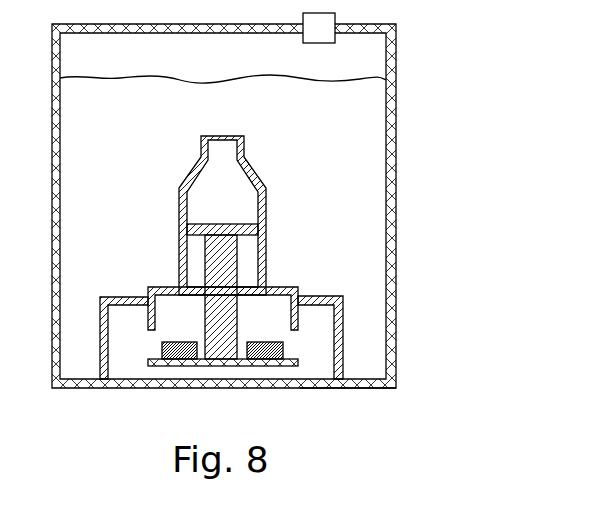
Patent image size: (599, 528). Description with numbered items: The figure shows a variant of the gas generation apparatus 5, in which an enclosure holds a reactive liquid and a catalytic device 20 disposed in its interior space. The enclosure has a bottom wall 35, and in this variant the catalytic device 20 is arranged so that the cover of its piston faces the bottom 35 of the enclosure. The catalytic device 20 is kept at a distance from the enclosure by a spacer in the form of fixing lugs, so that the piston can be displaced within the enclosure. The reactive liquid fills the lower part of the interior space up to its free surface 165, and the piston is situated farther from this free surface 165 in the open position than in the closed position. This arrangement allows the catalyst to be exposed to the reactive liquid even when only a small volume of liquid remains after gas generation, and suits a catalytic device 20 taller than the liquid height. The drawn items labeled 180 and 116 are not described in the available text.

The gas generation apparatus 5 is at (414, 113).
The free surface of the reactive liquid 165 is at (386, 82).
The catalytic device 20 is at (266, 198).
The holder 180 is at (345, 333).
The base plate 116 is at (266, 366).
The bottom wall 35 is at (350, 388).